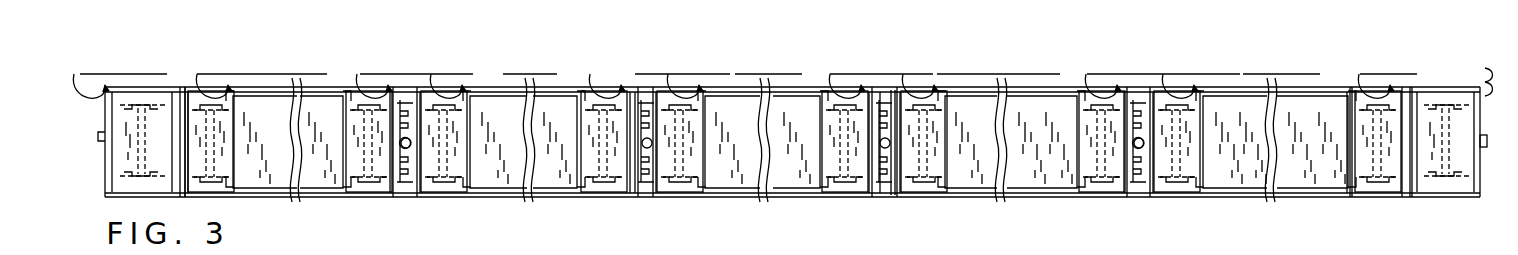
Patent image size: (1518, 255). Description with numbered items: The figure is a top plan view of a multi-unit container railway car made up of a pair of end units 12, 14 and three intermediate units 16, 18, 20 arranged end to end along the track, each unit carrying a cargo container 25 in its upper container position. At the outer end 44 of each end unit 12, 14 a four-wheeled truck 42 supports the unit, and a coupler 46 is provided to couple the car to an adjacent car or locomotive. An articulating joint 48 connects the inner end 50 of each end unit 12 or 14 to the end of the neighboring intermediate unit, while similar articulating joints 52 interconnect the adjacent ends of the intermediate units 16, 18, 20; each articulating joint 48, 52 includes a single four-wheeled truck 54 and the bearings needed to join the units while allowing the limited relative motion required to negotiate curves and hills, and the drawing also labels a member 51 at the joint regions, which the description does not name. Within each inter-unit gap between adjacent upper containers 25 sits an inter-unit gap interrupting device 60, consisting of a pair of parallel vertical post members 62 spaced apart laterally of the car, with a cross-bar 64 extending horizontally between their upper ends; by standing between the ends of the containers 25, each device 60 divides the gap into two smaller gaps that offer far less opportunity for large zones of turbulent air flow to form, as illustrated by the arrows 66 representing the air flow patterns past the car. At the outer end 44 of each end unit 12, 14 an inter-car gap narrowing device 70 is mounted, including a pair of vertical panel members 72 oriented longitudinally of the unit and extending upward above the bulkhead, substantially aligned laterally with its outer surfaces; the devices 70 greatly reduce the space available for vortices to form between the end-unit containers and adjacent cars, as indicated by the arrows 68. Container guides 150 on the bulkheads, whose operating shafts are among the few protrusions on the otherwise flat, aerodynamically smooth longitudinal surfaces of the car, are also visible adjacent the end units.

The end unit 12 is at (1250, 163).
The end unit 14 is at (289, 156).
The intermediate unit 16 is at (985, 197).
The intermediate unit 18 is at (505, 197).
The intermediate unit 20 is at (752, 197).
The cargo container 25 is at (311, 107).
The four-wheeled truck 42 is at (215, 192).
The outer end 44 is at (1484, 150).
The coupler 46 is at (102, 140).
The articulating joint 48 is at (400, 143).
The inner end 50 is at (1147, 172).
The bracket 51 is at (630, 197).
The articulating joint 52 is at (882, 143).
The four-wheeled truck 54 is at (1178, 182).
The inter-unit gap interrupting device 60 is at (887, 90).
The vertical post member 62 is at (403, 196).
The cross-bar 64 is at (645, 143).
The arrows 66 is at (418, 70).
The arrows 68 is at (110, 74).
The inter-car gap narrowing device 70 is at (161, 86).
The vertical panel member 72 is at (140, 87).
The container guide 150 is at (1348, 192).